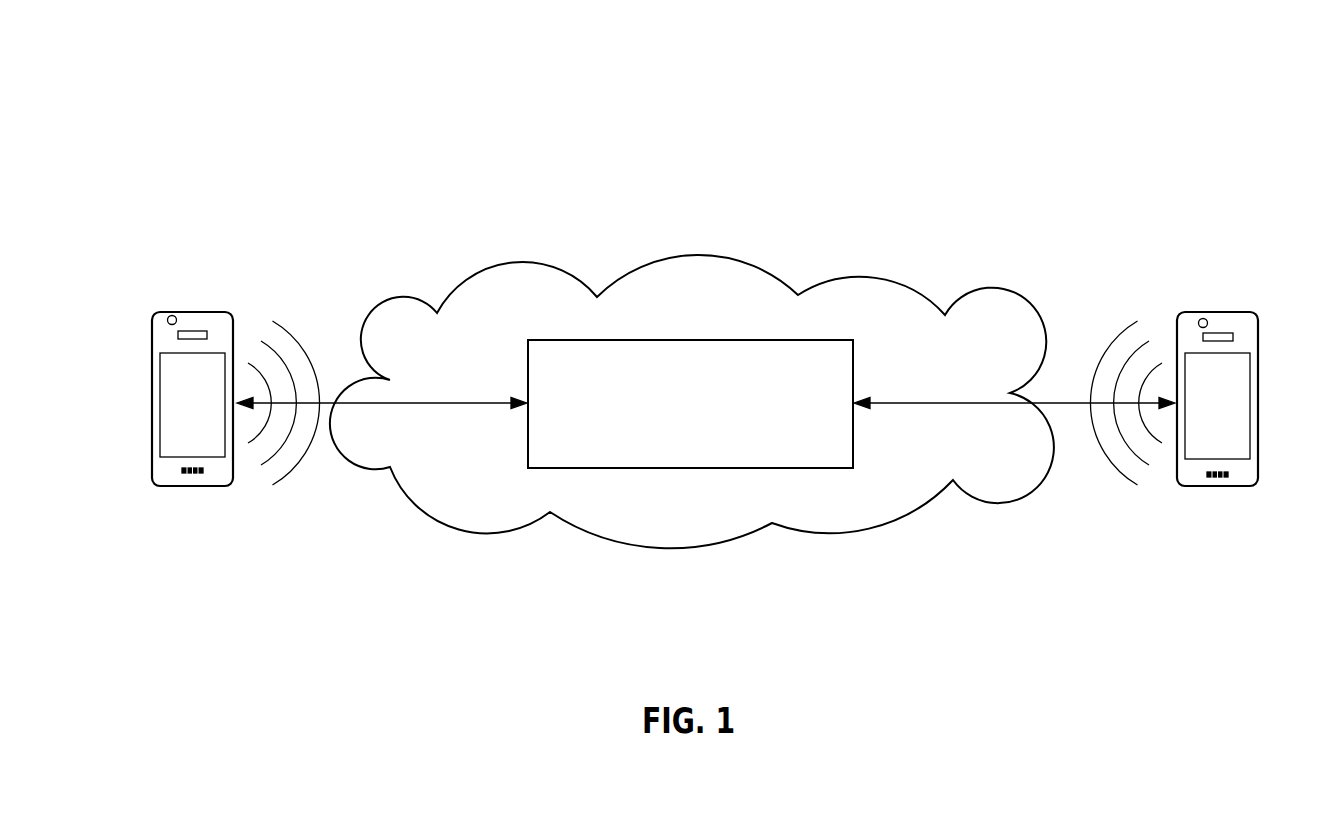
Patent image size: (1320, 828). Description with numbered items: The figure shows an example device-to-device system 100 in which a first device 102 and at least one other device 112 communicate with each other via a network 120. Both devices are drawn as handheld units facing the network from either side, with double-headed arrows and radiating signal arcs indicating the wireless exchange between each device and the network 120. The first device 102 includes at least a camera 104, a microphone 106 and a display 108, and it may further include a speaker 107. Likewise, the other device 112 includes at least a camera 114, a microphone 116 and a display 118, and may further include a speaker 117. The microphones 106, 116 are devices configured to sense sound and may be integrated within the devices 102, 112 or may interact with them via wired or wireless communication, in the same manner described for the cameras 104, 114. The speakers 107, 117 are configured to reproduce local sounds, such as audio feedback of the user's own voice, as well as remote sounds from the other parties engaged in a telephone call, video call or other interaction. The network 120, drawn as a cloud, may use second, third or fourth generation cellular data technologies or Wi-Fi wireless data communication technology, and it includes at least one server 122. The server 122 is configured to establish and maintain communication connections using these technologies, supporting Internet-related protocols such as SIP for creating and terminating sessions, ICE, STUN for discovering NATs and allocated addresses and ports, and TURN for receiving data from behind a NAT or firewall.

The device-to-device system 100 is at (181, 50).
The first device 102 is at (215, 310).
The camera 104 is at (168, 318).
The microphone 106 is at (193, 473).
The speaker 107 is at (193, 330).
The display 108 is at (160, 380).
The device 112 is at (1227, 312).
The camera 114 is at (1198, 320).
The microphone 116 is at (1210, 478).
The speaker 117 is at (1220, 332).
The display 118 is at (1250, 368).
The network 120 is at (472, 272).
The server 122 is at (706, 442).